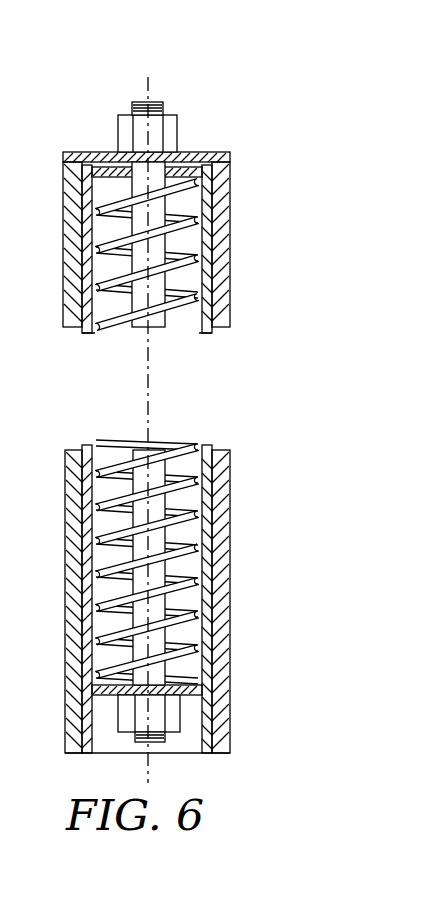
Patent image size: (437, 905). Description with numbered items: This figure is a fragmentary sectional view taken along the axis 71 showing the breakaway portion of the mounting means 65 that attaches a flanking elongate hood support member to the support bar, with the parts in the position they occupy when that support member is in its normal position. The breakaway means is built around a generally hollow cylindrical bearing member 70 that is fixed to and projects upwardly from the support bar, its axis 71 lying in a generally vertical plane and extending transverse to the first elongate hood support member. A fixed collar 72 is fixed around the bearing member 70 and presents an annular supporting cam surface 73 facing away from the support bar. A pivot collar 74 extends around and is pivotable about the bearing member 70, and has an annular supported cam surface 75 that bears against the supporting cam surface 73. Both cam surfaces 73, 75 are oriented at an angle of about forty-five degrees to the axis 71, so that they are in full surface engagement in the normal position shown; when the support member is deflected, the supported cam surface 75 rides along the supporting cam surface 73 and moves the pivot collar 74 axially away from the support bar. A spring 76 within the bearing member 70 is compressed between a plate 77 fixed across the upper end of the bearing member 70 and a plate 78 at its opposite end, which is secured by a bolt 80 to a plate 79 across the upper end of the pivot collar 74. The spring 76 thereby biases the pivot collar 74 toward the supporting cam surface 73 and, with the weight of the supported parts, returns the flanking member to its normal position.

The mounting means 65 is at (170, 426).
The bearing member 70 is at (87, 447).
The axis 71 is at (147, 87).
The fixed collar 72 is at (225, 657).
The supporting cam surface 73 is at (215, 478).
The pivot collar 74 is at (227, 278).
The supported cam surface 75 is at (72, 617).
The spring 76 is at (183, 447).
The plate 77 is at (185, 168).
The plate 78 is at (192, 695).
The plate 79 is at (228, 153).
The bolt 80 is at (165, 105).